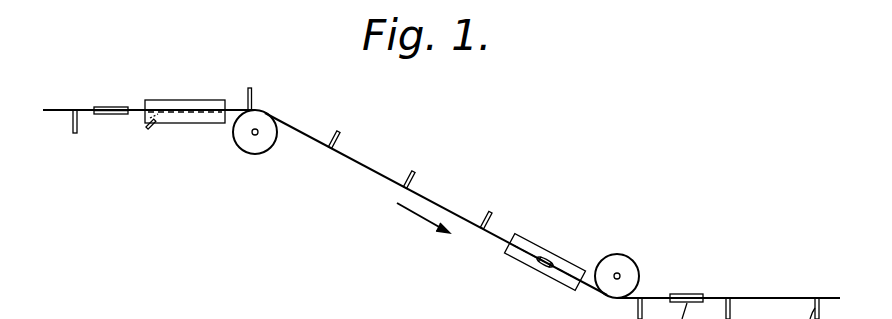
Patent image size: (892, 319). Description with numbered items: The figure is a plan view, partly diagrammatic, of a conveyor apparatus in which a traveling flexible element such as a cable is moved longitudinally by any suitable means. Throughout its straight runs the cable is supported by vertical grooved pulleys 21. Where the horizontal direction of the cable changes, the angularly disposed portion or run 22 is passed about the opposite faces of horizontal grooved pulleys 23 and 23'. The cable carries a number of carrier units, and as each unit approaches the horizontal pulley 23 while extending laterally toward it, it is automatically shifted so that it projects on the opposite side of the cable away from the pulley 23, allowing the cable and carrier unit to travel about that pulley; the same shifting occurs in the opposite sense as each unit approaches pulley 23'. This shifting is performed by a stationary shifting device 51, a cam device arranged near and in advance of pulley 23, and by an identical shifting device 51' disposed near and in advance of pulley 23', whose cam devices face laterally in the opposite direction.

The vertical grooved pulleys 21 is at (111, 116).
The angularly disposed portion or run 22 is at (385, 178).
The horizontal grooved pulley 23 is at (247, 153).
The horizontal grooved pulley 23' is at (629, 262).
The stationary shifting device 51 is at (185, 133).
The shifting device 51' is at (534, 265).